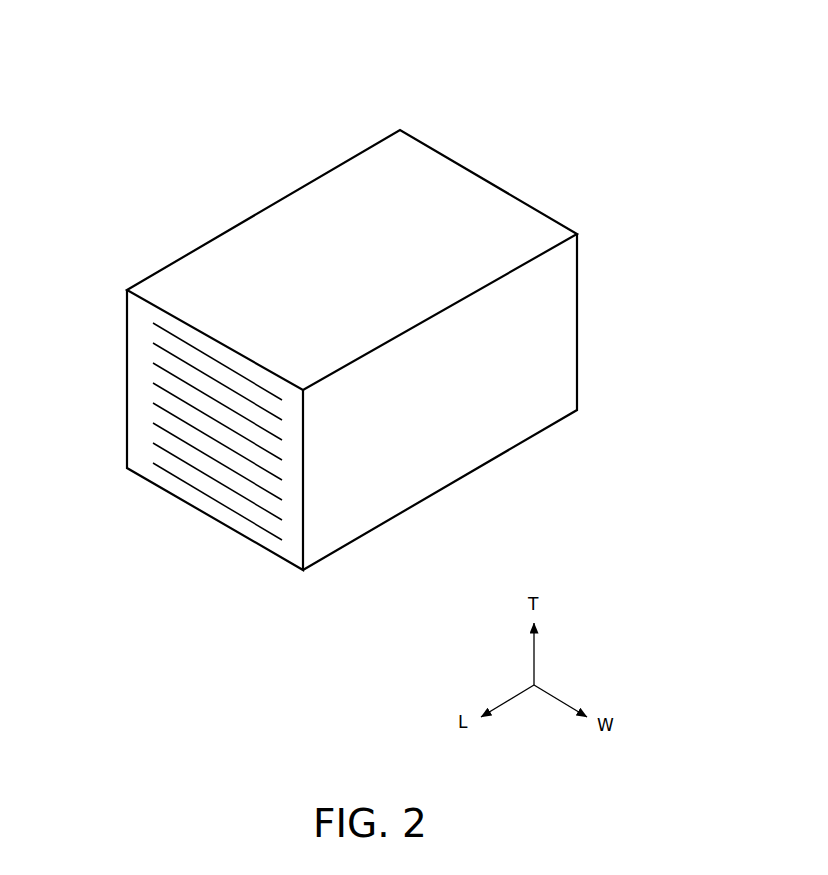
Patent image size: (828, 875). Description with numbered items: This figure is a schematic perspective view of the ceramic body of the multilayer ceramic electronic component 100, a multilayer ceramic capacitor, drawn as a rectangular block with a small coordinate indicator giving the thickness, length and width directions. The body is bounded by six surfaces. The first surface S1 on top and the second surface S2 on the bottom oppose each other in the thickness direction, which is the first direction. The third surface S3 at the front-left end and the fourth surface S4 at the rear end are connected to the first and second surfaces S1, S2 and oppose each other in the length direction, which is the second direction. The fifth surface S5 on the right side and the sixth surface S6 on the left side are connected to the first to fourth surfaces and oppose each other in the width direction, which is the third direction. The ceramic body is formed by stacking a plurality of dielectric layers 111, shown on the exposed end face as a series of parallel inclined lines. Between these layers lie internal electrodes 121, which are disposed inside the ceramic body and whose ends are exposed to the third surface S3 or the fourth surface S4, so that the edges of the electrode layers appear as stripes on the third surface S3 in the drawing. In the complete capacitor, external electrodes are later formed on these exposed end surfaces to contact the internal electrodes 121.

The multilayer ceramic electronic component 100 is at (150, 27).
The dielectric layer 111 is at (152, 376).
The internal electrode 121 is at (153, 323).
The first surface S1 is at (355, 196).
The second surface S2 is at (360, 513).
The third surface S3 is at (212, 491).
The fourth surface S4 is at (469, 207).
The fifth surface S5 is at (552, 339).
The sixth surface S6 is at (200, 281).